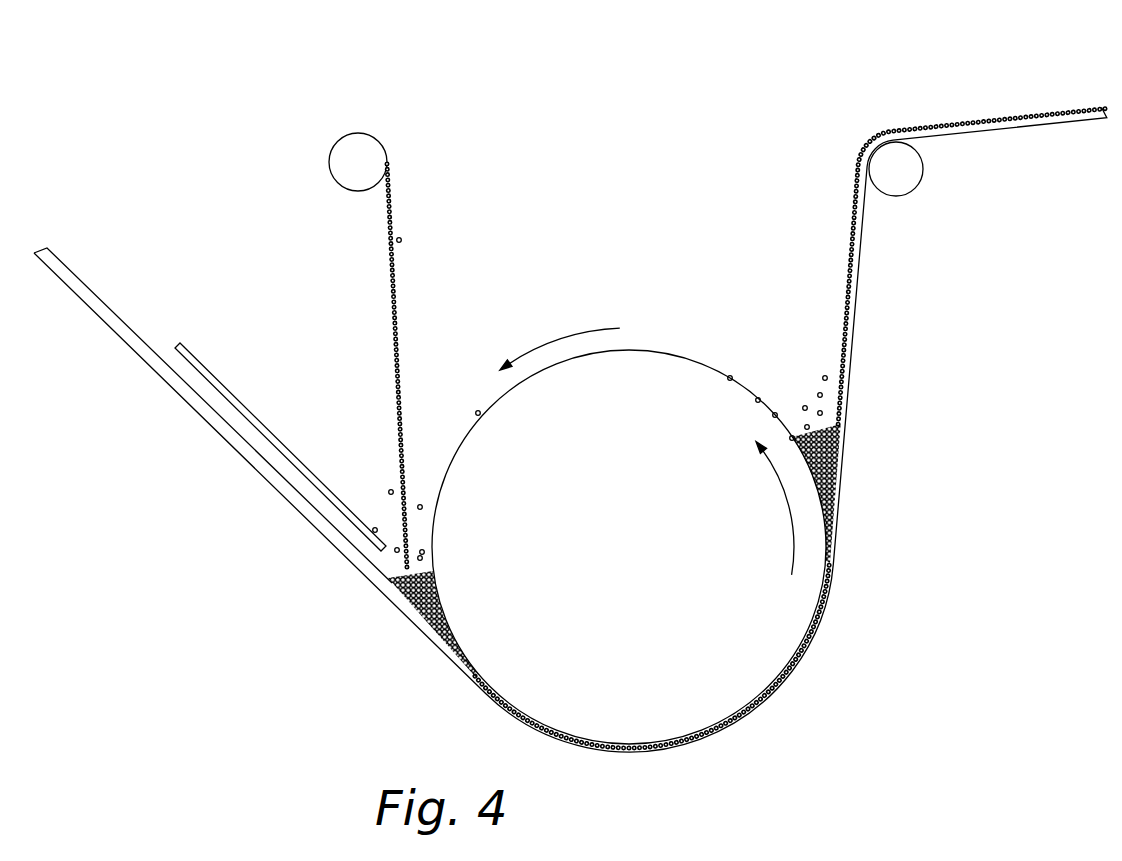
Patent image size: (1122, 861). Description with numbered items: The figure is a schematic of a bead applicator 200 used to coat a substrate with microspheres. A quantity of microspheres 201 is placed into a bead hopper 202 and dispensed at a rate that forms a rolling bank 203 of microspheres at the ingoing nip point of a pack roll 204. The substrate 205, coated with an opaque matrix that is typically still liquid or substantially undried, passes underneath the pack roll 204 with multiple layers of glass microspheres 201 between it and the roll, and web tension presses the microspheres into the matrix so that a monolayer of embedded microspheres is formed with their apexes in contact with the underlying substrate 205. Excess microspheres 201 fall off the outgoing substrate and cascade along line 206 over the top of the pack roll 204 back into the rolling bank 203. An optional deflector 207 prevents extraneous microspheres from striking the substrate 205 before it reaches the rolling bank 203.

The bead applicator 200 is at (843, 92).
The microspheres 201 is at (410, 252).
The bead hopper 202 is at (357, 133).
The rolling bank 203 is at (393, 528).
The pack roll 204 is at (674, 495).
The substrate 205 is at (73, 268).
The line 206 is at (605, 330).
The deflector 207 is at (275, 432).